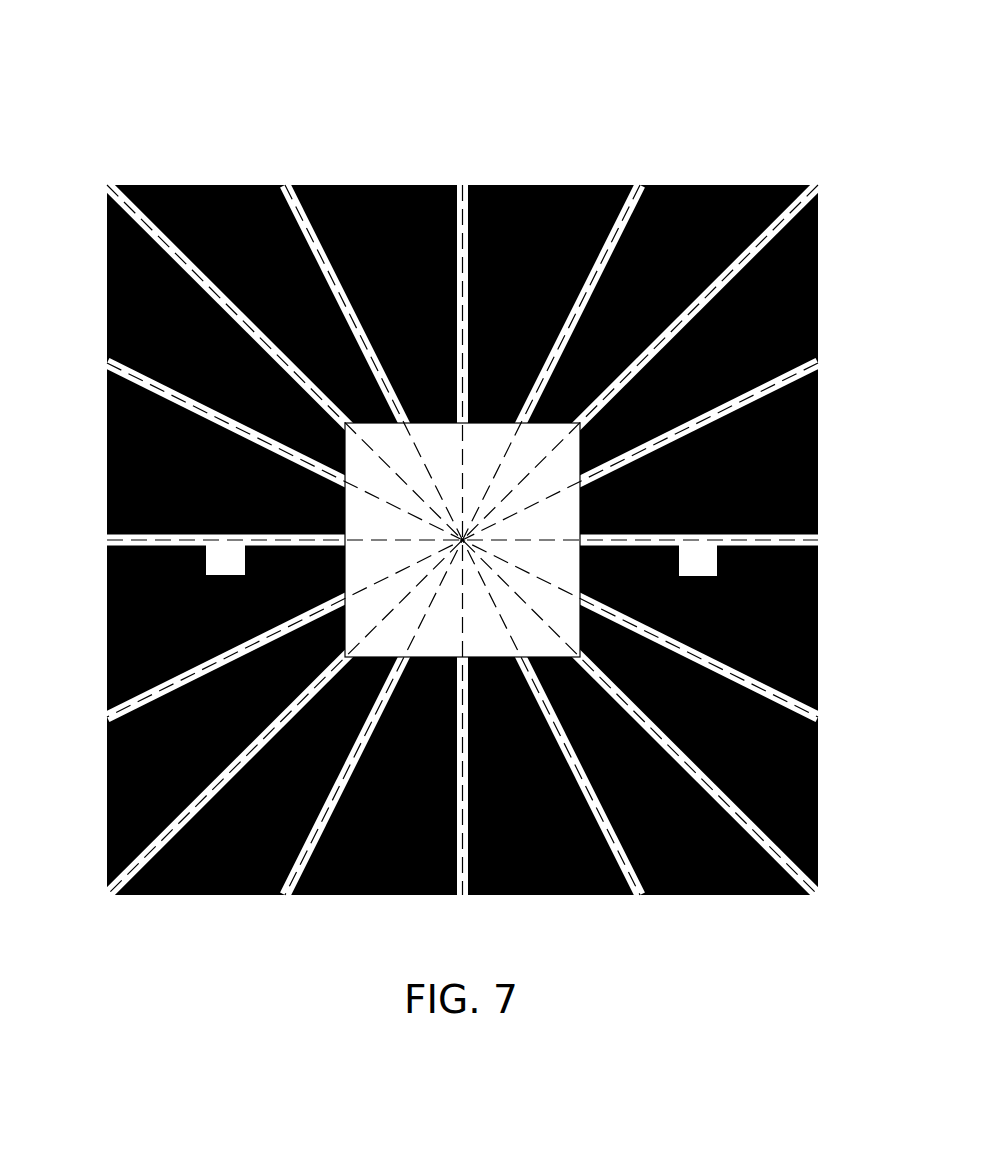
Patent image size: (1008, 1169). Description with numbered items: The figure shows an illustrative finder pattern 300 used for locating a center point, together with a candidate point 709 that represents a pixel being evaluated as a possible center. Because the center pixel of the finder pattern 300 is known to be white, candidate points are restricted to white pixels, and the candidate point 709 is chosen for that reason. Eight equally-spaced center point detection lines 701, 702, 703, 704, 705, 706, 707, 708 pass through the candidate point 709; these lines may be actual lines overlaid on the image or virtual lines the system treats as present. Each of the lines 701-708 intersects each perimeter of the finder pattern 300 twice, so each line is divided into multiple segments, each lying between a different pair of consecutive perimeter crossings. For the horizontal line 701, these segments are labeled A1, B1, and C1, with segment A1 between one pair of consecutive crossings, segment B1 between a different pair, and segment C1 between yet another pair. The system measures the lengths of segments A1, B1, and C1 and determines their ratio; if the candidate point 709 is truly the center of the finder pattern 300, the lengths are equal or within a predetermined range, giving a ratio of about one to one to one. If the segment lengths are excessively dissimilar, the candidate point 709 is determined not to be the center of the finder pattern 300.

The finder pattern 300 is at (584, 84).
The center point detection line 701 is at (106, 538).
The center point detection line 702 is at (106, 364).
The center point detection line 703 is at (107, 183).
The center point detection line 704 is at (285, 183).
The center point detection line 705 is at (461, 183).
The center point detection line 706 is at (640, 183).
The center point detection line 707 is at (818, 183).
The center point detection line 708 is at (820, 365).
The candidate point 709 is at (468, 540).
The segment a1 A1 is at (225, 560).
The segment b1 B1 is at (461, 557).
The segment c1 C1 is at (698, 560).